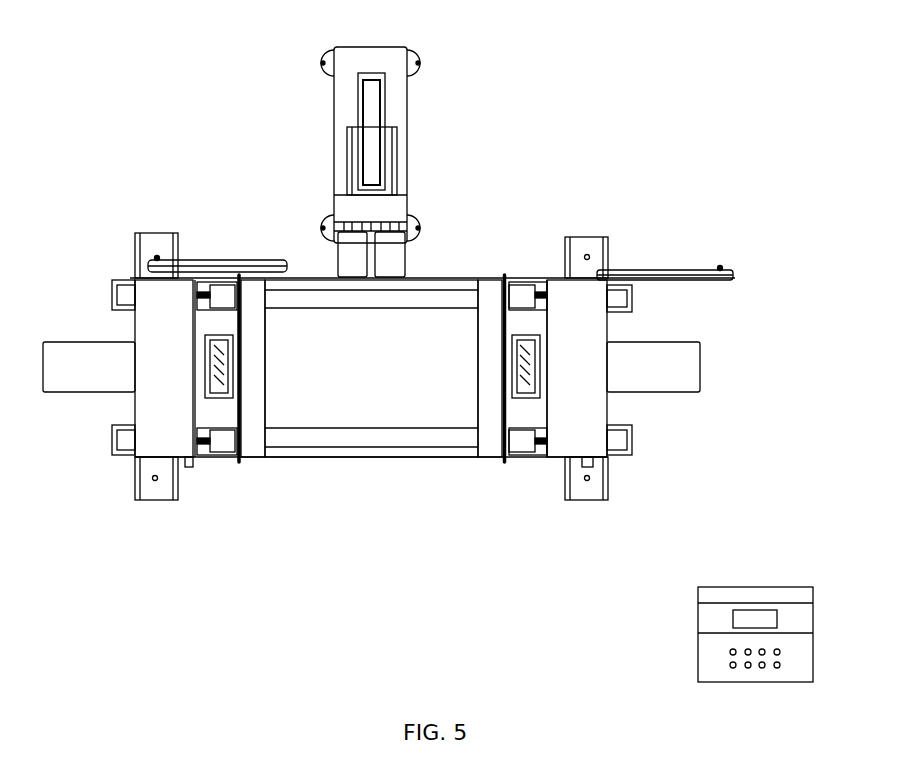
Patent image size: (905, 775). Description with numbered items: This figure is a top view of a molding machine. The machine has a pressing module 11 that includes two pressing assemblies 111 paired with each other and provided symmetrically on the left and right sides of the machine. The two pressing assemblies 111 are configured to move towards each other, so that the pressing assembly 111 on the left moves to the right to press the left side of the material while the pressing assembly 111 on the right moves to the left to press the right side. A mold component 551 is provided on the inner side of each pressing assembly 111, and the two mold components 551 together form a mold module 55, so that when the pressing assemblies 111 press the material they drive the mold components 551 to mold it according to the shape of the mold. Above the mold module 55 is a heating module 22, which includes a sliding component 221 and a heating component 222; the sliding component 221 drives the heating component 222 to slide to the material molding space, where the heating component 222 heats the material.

The pressing module 11 is at (437, 643).
The pressing assembly 111 is at (422, 457).
The heating module 22 is at (142, 102).
The sliding component 221 is at (278, 134).
The heating component 222 is at (283, 230).
The mold module 55 is at (412, 502).
The mold component 551 is at (372, 412).